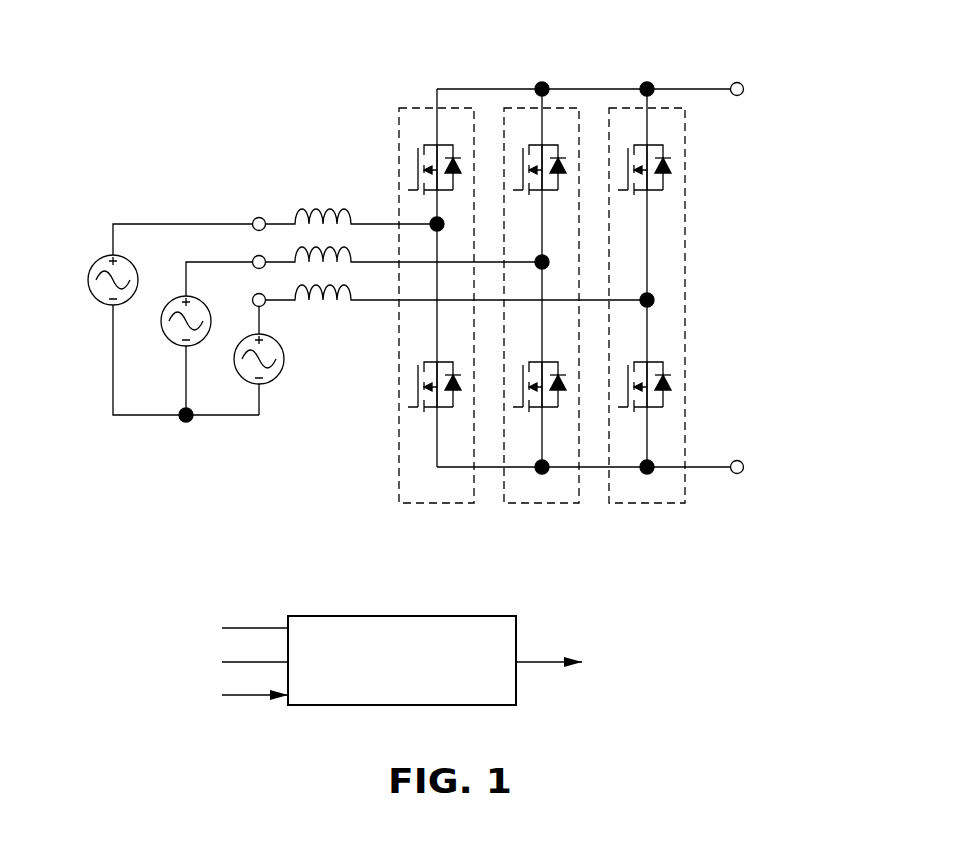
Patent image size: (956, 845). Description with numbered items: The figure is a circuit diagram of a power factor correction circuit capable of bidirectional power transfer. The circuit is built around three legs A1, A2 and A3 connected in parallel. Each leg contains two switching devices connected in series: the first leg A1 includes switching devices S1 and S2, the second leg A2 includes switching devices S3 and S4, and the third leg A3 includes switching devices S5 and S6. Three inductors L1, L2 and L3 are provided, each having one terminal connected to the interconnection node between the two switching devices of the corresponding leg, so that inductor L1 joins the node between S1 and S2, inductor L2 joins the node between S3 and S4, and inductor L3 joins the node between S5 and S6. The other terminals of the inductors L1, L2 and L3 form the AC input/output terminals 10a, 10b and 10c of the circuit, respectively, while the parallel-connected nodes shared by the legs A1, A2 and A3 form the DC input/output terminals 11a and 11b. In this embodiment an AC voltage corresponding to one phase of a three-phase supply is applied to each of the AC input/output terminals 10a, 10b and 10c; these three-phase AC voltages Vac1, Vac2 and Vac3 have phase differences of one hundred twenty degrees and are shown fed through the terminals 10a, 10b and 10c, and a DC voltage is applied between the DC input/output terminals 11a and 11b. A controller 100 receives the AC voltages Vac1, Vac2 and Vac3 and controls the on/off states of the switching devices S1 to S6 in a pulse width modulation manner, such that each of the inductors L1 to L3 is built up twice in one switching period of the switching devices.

The AC input/output terminal 10a is at (261, 218).
The AC input/output terminal 10b is at (256, 257).
The AC input/output terminal 10c is at (264, 305).
The DC input/output terminal 11a is at (742, 84).
The DC input/output terminal 11b is at (737, 474).
The controller 100 is at (345, 616).
The leg A1 is at (436, 346).
The leg A2 is at (541, 346).
The leg A3 is at (647, 346).
The switching device S1 is at (438, 181).
The switching device S2 is at (438, 402).
The switching device S3 is at (543, 181).
The switching device S4 is at (543, 402).
The switching device S5 is at (648, 181).
The switching device S6 is at (648, 402).
The inductor L1 is at (351, 211).
The inductor L2 is at (403, 248).
The inductor L3 is at (456, 285).
The AC voltage Vac1 is at (162, 319).
The AC voltage Vac2 is at (200, 342).
The AC voltage Vac3 is at (275, 357).